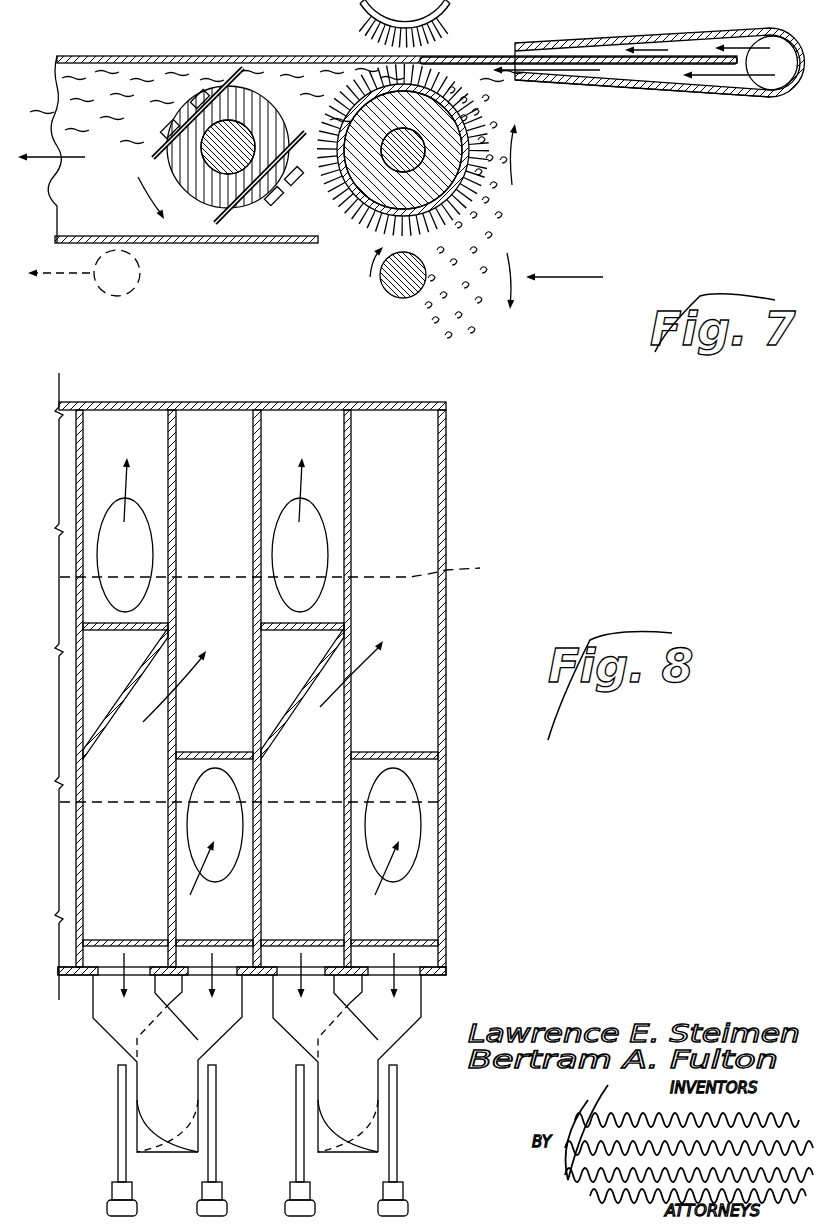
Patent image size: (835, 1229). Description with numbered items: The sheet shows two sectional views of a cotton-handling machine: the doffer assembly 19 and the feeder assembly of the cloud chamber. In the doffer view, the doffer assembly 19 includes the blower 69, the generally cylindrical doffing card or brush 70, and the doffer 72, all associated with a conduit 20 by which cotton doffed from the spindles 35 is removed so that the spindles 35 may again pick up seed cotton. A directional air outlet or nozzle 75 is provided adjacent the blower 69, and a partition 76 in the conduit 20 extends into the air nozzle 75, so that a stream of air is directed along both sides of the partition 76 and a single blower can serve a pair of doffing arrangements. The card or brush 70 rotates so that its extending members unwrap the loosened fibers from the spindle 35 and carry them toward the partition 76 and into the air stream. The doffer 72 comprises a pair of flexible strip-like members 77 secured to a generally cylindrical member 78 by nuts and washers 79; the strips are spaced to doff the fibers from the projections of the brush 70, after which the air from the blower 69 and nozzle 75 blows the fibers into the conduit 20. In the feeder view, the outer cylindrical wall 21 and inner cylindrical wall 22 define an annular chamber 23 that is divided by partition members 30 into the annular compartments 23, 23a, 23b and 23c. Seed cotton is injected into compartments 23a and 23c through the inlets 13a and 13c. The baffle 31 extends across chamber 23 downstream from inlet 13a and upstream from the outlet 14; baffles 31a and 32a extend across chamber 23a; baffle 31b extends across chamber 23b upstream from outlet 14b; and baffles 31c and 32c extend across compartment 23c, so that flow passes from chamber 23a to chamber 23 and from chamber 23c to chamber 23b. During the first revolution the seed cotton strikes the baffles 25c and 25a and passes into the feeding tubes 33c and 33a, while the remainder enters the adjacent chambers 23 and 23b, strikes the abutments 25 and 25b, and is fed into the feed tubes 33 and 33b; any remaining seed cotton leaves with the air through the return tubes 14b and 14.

In FIG. 8, the inlet 13a is at (315, 553).
In FIG. 8, the inlet 13c is at (138, 553).
In FIG. 8, the return line 14 is at (402, 824).
In FIG. 8, the return tube 14b is at (228, 824).
In FIG. 7, the doffer assembly 19 is at (672, 100).
In FIG. 7, the conduit 20 is at (163, 243).
In FIG. 8, the outer cylindrical wall 21 is at (222, 402).
In FIG. 8, the inner cylindrical wall 22 is at (283, 681).
In FIG. 8, the annular chamber 23 is at (404, 700).
In FIG. 8, the annular compartment 23a is at (320, 777).
In FIG. 8, the annular compartment 23b is at (226, 710).
In FIG. 8, the annular compartment 23c is at (103, 770).
In FIG. 8, the baffle or abutment 25 is at (392, 940).
In FIG. 8, the baffle 25a is at (295, 940).
In FIG. 8, the baffle or abutment 25b is at (214, 940).
In FIG. 8, the baffle 25c is at (120, 940).
In FIG. 8, the partition member 30 is at (175, 456).
In FIG. 8, the baffle 31 is at (383, 752).
In FIG. 8, the baffle 31a is at (284, 632).
In FIG. 8, the baffle 31b is at (201, 752).
In FIG. 8, the baffle 31c is at (125, 632).
In FIG. 8, the baffle 32a is at (283, 713).
In FIG. 8, the baffle 32c is at (105, 703).
In FIG. 8, the feed tube 33 is at (407, 998).
In FIG. 8, the feeding tube 33a is at (293, 1025).
In FIG. 8, the feed tube 33b is at (215, 1032).
In FIG. 8, the feeding tube 33c is at (118, 1037).
In FIG. 7, the spindle 35 is at (388, 291).
In FIG. 7, the blower 69 is at (783, 99).
In FIG. 7, the doffing card or brush 70 is at (372, 14).
In FIG. 7, the doffer 72 is at (252, 98).
In FIG. 7, the air nozzle 75 is at (621, 82).
In FIG. 7, the partition 76 is at (583, 66).
In FIG. 7, the flexible strip-like member 77 is at (228, 84).
In FIG. 7, the generally cylindrical member 78 is at (203, 208).
In FIG. 7, the nuts and washers 79 is at (178, 130).